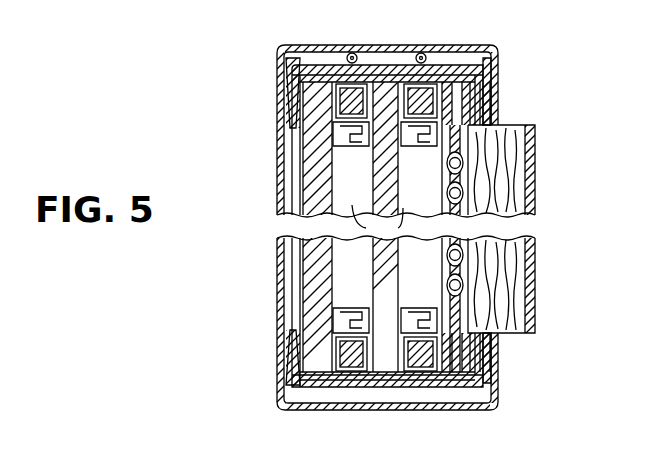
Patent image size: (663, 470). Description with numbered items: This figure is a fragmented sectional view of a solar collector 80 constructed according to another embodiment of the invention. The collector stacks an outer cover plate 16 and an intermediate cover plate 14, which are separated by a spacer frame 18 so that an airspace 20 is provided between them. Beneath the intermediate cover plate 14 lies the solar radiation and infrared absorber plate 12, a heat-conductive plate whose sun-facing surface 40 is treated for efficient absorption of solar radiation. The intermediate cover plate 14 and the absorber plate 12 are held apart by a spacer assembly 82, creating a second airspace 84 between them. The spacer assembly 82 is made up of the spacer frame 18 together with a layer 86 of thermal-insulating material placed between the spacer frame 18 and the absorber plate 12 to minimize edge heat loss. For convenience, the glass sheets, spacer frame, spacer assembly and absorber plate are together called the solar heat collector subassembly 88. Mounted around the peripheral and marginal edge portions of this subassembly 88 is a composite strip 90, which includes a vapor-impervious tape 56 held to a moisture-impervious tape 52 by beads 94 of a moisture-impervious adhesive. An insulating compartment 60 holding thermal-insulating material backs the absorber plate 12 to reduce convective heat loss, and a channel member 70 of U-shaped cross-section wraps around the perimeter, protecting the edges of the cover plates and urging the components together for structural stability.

The solar radiation and infrared absorber plate 12 is at (472, 140).
The intermediate cover plate 14 is at (305, 255).
The outer cover plate 16 is at (305, 194).
The spacer frame 18 is at (398, 308).
The airspace 20 is at (377, 221).
The surface of the absorber plate 40 is at (447, 165).
The moisture-impervious tape 52 is at (373, 68).
The vapor-impervious tape 56 is at (392, 77).
The insulating compartment 60 is at (554, 184).
The channel member 70 is at (289, 38).
The solar collector 80 is at (549, 40).
The spacer assembly 82 is at (418, 280).
The airspace 84 is at (428, 195).
The layer of thermal-insulating material 86 is at (445, 118).
The solar heat collector subassembly 88 is at (280, 231).
The composite strip 90 is at (350, 397).
The beads of moisture-impervious adhesive 94 is at (297, 108).